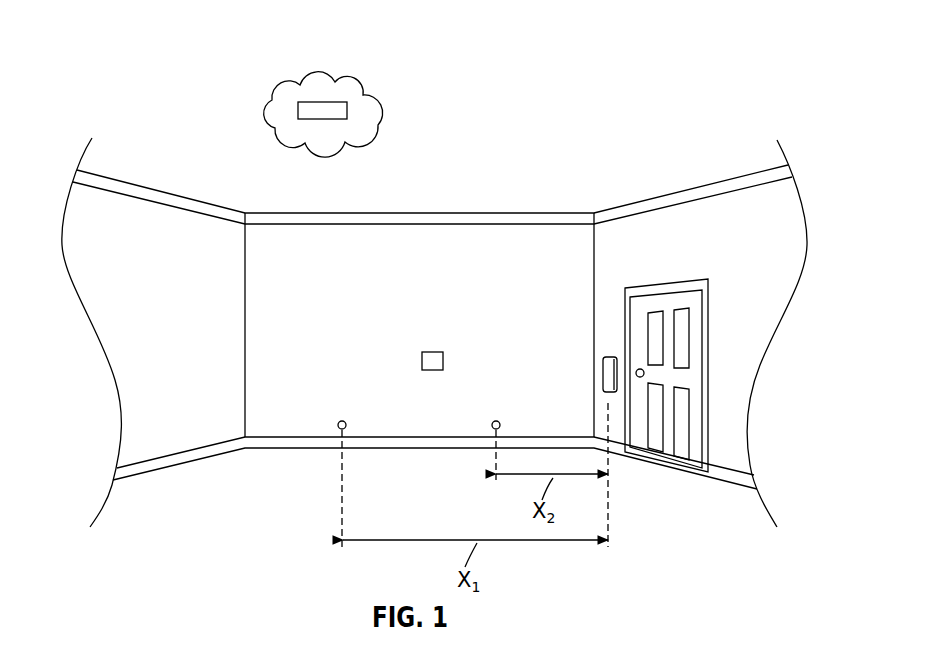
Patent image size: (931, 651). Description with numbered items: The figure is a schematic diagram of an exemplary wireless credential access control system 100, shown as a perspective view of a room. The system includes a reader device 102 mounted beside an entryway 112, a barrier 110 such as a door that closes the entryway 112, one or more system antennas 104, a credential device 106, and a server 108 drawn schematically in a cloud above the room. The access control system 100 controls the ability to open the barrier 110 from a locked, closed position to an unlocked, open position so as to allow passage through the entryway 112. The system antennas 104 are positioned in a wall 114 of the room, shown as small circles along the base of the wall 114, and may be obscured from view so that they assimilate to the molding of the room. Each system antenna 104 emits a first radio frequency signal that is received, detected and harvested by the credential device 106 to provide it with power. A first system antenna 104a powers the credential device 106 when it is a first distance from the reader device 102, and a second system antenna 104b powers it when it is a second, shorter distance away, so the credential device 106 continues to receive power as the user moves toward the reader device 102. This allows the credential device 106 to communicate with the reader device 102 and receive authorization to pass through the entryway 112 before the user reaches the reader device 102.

The wireless credential access control system 100 is at (744, 98).
The reader device 102 is at (605, 375).
The system antenna 104 is at (456, 415).
The first system antenna 104a is at (345, 423).
The second system antenna 104b is at (498, 423).
The credential device 106 is at (438, 362).
The server 108 is at (338, 108).
The barrier 110 is at (688, 377).
The entryway 112 is at (668, 305).
The wall 114 is at (412, 247).